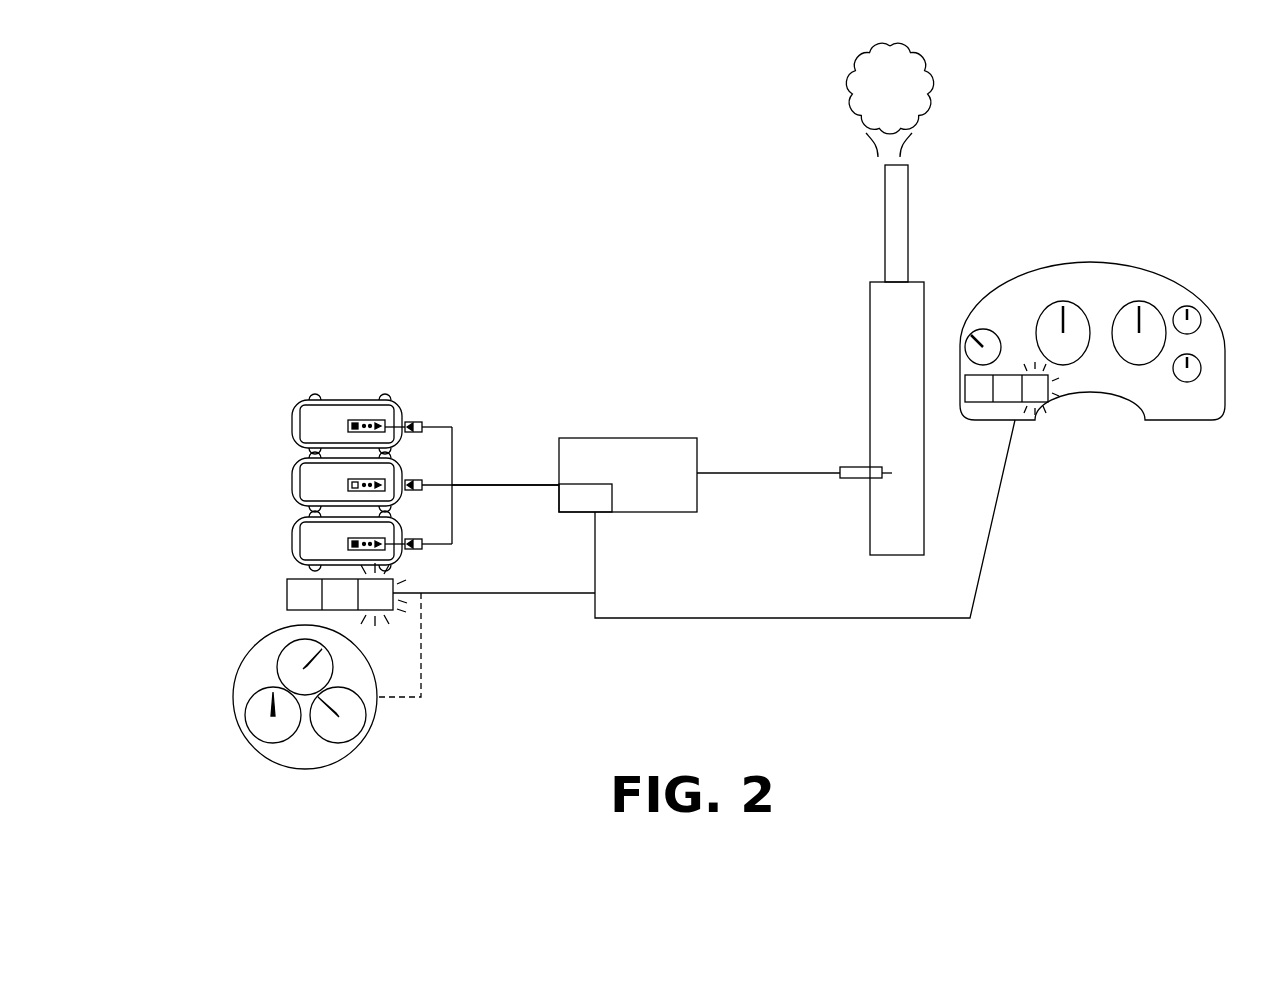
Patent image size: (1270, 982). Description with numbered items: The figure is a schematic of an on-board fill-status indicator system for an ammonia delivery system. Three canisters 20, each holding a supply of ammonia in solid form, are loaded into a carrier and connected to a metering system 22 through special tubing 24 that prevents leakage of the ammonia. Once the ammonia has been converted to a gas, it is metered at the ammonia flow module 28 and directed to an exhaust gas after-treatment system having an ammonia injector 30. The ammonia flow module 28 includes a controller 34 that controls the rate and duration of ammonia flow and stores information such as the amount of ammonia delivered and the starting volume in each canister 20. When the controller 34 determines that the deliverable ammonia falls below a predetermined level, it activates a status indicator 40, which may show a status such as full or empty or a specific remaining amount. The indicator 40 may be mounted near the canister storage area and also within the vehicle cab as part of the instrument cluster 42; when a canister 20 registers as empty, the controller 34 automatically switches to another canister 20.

The canister 20 is at (342, 415).
The metering system 22 is at (596, 390).
The special tubing 24 is at (490, 483).
The ammonia flow module 28 is at (665, 452).
The ammonia injector 30 is at (860, 470).
The controller 34 is at (590, 497).
The status indicator 40 is at (1046, 433).
The instrument cluster 42 is at (1102, 285).